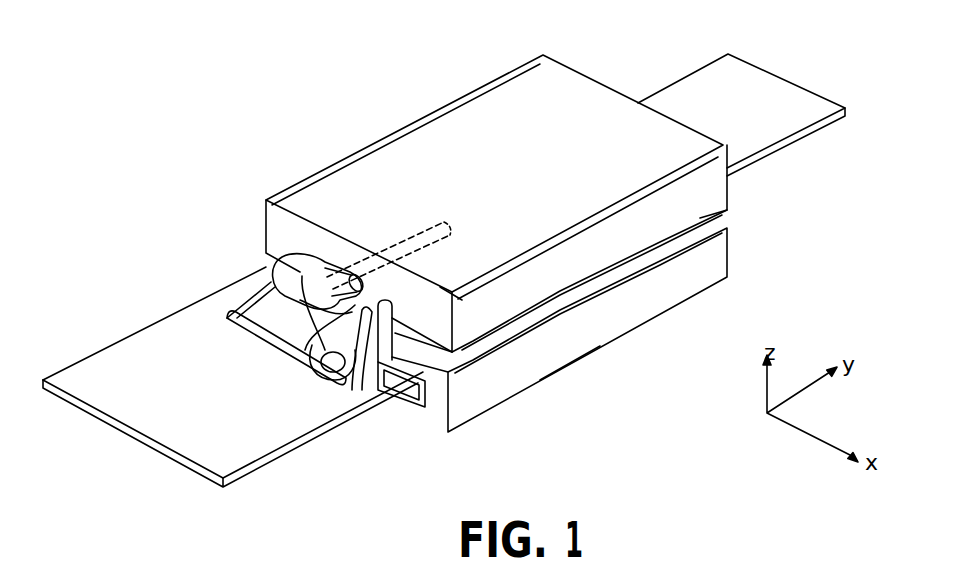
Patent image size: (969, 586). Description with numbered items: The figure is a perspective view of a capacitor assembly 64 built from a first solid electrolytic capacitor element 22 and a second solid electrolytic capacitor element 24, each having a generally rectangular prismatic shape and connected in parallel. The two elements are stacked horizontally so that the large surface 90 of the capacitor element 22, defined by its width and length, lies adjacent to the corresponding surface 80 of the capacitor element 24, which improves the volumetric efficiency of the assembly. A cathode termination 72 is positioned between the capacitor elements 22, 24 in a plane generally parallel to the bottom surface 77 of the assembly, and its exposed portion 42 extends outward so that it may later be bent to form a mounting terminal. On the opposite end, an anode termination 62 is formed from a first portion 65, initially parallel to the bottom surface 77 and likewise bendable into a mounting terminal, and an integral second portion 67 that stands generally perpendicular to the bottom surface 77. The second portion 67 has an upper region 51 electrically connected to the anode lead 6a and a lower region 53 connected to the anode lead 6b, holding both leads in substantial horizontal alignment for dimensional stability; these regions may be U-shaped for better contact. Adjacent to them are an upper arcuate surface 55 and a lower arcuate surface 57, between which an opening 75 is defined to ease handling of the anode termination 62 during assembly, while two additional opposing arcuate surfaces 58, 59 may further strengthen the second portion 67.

The capacitor assembly 64 is at (146, 118).
The first solid electrolytic capacitor element 22 is at (557, 85).
The second solid electrolytic capacitor element 24 is at (712, 270).
The exposed portion 42 is at (788, 98).
The first portion 65 is at (260, 437).
The cathode termination 72 is at (682, 100).
The anode termination 62 is at (132, 356).
The surface 90 is at (720, 208).
The anode lead 6a is at (433, 227).
The anode lead 6b is at (397, 334).
The upper region 51 is at (318, 273).
The upper arcuate surface 55 is at (275, 293).
The opposing arcuate surface 58 is at (246, 321).
The lower arcuate surface 57 is at (286, 338).
The lower region 53 is at (322, 345).
The opening 75 is at (364, 392).
The opposing arcuate surface 59 is at (382, 383).
The surface 80 is at (440, 363).
The second portion 67 is at (457, 290).
The bottom surface 77 is at (563, 370).